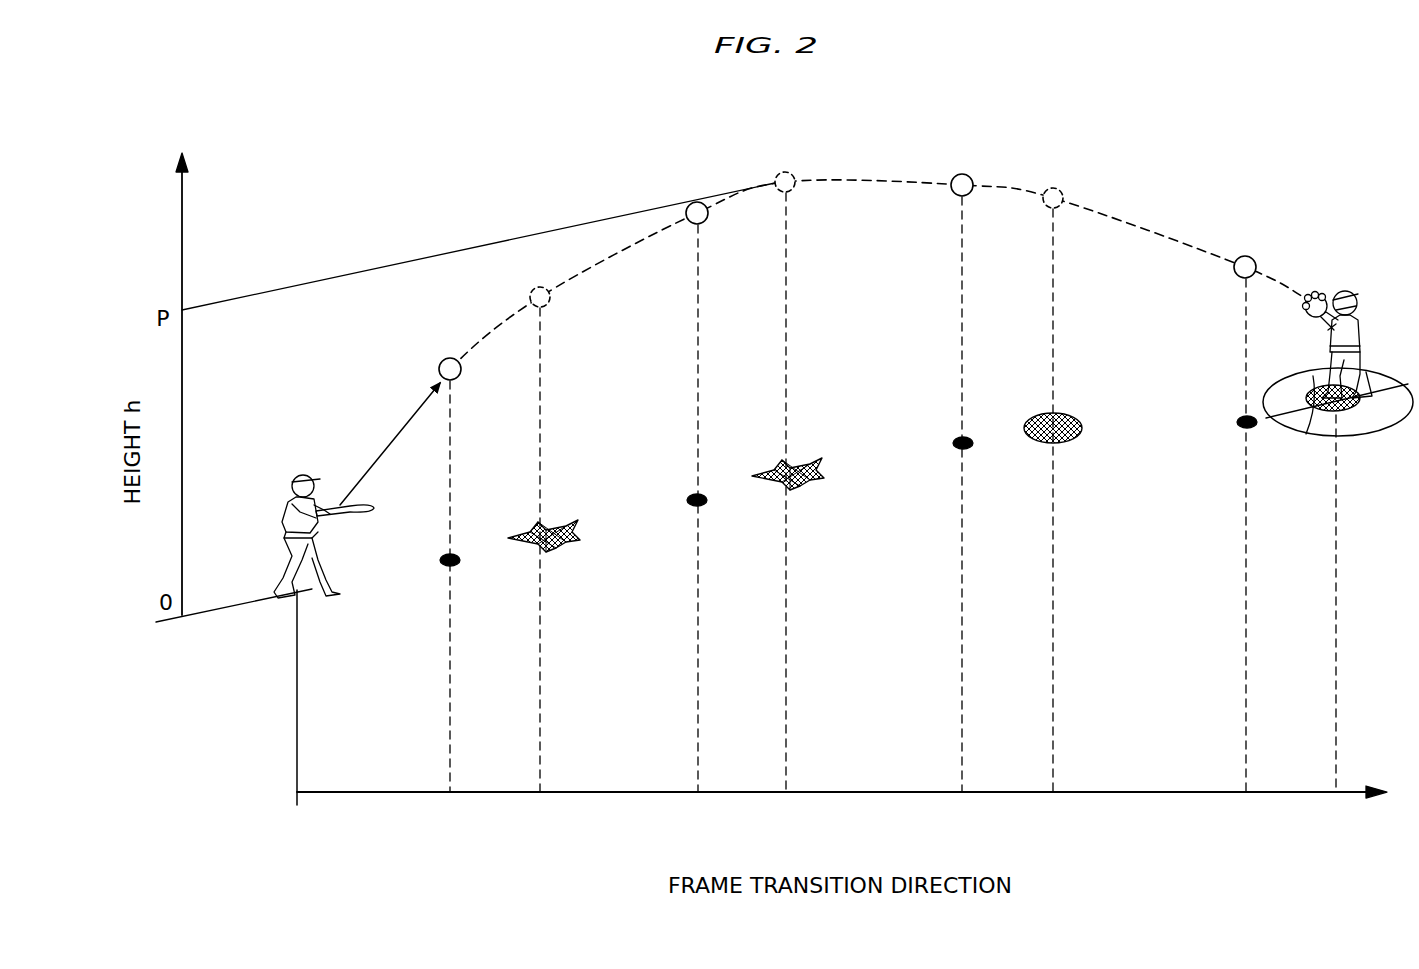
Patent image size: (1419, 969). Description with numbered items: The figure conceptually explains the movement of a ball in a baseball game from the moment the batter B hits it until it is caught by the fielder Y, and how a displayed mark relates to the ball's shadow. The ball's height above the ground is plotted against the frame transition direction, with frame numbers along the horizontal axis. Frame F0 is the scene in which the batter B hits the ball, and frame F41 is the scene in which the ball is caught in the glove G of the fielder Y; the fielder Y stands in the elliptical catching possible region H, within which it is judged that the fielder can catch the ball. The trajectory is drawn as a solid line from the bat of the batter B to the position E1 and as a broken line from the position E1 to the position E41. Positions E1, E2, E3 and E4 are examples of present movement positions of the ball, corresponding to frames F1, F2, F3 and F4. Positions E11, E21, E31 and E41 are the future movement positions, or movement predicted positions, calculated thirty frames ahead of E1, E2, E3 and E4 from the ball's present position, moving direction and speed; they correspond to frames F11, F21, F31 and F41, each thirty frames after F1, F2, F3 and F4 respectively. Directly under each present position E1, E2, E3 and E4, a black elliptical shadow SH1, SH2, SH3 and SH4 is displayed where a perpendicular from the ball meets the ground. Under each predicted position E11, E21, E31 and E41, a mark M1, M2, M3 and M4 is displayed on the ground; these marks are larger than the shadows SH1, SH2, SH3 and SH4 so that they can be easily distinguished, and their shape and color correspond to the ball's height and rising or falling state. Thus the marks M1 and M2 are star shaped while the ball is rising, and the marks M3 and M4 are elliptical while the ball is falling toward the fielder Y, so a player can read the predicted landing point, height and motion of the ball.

The batter B is at (290, 503).
The fielder Y is at (1358, 297).
The glove of the fielder G is at (1327, 298).
The catching possible region H is at (1372, 418).
The movement position E1 is at (449, 355).
The future movement position E11 is at (540, 282).
The movement position E2 is at (697, 197).
The future movement position E21 is at (786, 167).
The movement position E3 is at (962, 169).
The future movement position E31 is at (1054, 182).
The movement position E4 is at (1246, 250).
The future movement position E41 is at (1304, 288).
The shadow of the ball SH1 is at (445, 566).
The shadow of the ball SH2 is at (692, 506).
The shadow of the ball SH3 is at (958, 450).
The shadow of the ball SH4 is at (1243, 430).
The mark M1 is at (528, 545).
The mark M2 is at (772, 487).
The mark M3 is at (1038, 440).
The mark M4 is at (1322, 412).
The frame number F0 is at (298, 825).
The frame number F1 is at (450, 609).
The frame number F11 is at (540, 573).
The frame number F2 is at (698, 531).
The frame number F21 is at (786, 515).
The frame number F3 is at (962, 517).
The frame number F31 is at (1053, 523).
The frame number F4 is at (1247, 558).
The frame number F41 is at (1336, 626).